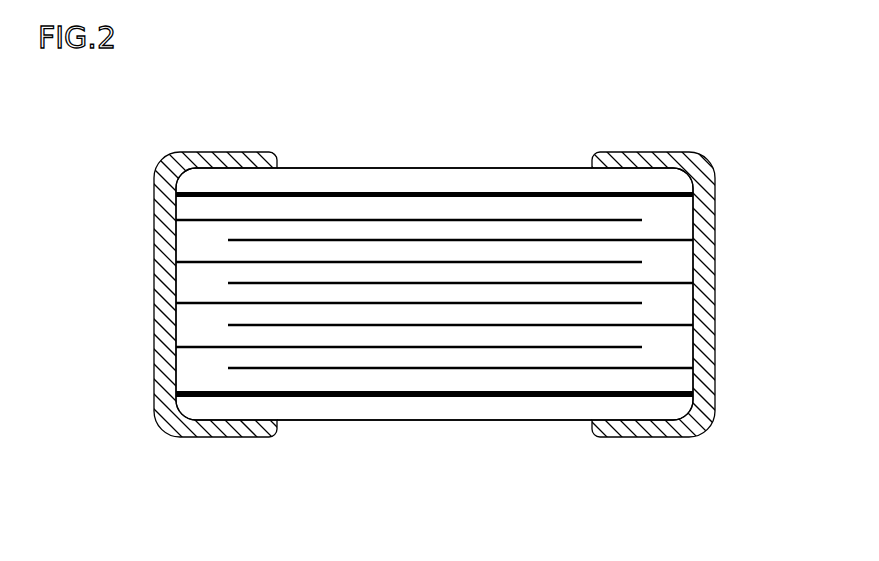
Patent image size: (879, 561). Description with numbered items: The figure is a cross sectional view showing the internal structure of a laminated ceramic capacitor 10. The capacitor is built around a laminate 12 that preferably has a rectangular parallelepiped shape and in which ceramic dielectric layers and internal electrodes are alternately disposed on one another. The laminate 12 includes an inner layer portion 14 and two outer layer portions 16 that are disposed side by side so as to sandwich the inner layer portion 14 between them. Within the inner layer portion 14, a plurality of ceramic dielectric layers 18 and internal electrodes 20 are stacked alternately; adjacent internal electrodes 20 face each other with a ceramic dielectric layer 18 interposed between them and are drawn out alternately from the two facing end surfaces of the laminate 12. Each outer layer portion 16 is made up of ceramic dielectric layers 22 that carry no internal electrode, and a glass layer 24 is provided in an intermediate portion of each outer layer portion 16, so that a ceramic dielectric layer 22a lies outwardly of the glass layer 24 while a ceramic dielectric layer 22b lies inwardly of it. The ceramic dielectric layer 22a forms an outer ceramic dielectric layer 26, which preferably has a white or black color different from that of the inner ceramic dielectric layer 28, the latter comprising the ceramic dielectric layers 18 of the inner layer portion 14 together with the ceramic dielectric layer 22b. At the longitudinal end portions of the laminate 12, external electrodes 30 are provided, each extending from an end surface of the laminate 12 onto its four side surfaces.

The laminated ceramic capacitor 10 is at (216, 66).
The laminate 12 is at (537, 167).
The inner layer portion 14 is at (758, 223).
The outer layer portion 16 is at (758, 153).
The ceramic dielectric layer 18 is at (443, 278).
The internal electrode 20 is at (508, 261).
The ceramic dielectric layer 22 is at (260, 112).
The ceramic dielectric layer 22a is at (297, 177).
The ceramic dielectric layer 22b is at (337, 210).
The glass layer 24 is at (566, 190).
The outer ceramic dielectric layer 26 is at (110, 153).
The inner ceramic dielectric layer 28 is at (110, 200).
The external electrode 30 is at (207, 152).